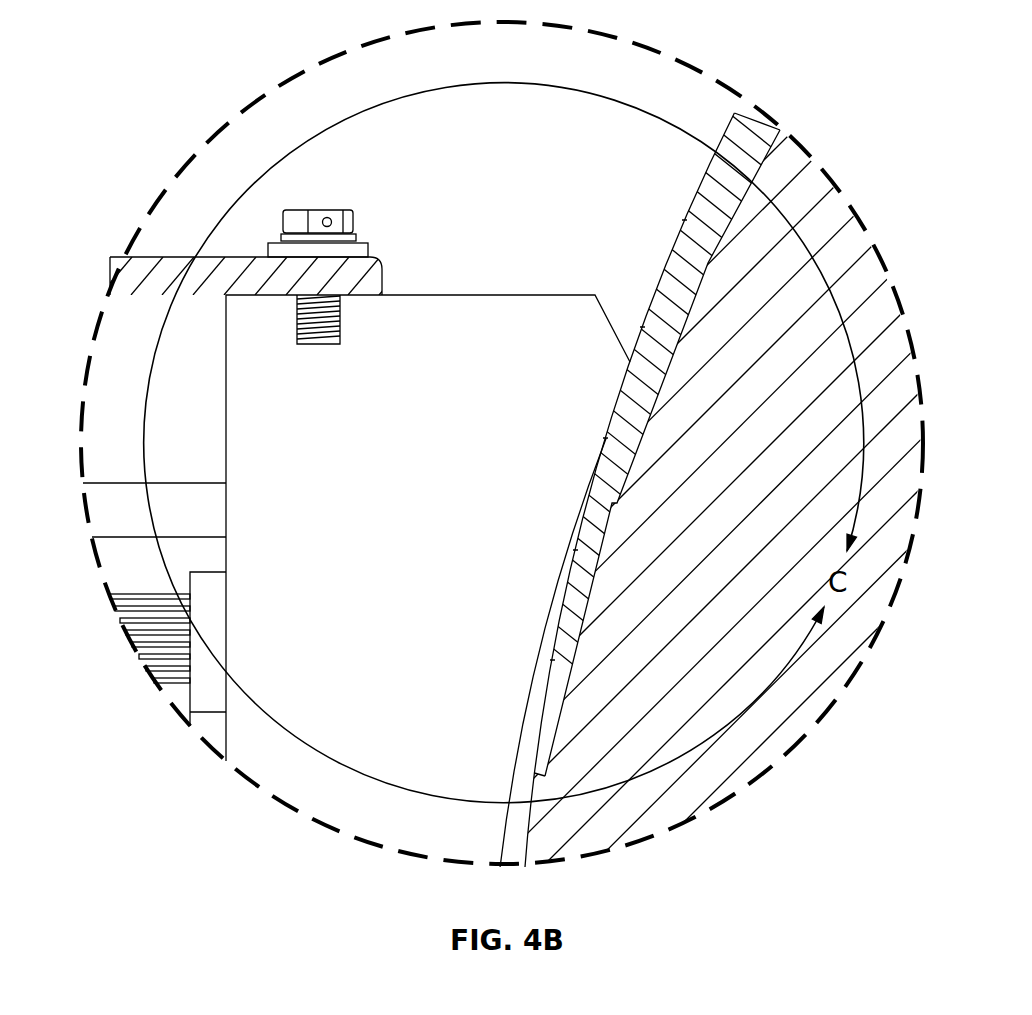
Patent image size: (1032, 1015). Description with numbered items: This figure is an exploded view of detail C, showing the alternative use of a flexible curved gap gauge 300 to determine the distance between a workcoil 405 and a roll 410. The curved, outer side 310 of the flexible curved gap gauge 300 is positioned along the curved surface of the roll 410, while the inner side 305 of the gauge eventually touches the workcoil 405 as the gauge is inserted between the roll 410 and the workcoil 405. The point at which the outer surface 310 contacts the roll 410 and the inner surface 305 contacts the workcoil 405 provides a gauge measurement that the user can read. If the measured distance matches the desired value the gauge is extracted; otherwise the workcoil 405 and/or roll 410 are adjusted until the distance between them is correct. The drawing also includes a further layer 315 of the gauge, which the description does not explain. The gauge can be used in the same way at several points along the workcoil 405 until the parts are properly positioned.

The flexible curved gap gauge 300 is at (680, 187).
The inner side 305 is at (667, 257).
The outer side 310 is at (648, 407).
The third panel layer 315 is at (617, 403).
The workcoil 405 is at (222, 397).
The roll 410 is at (773, 277).